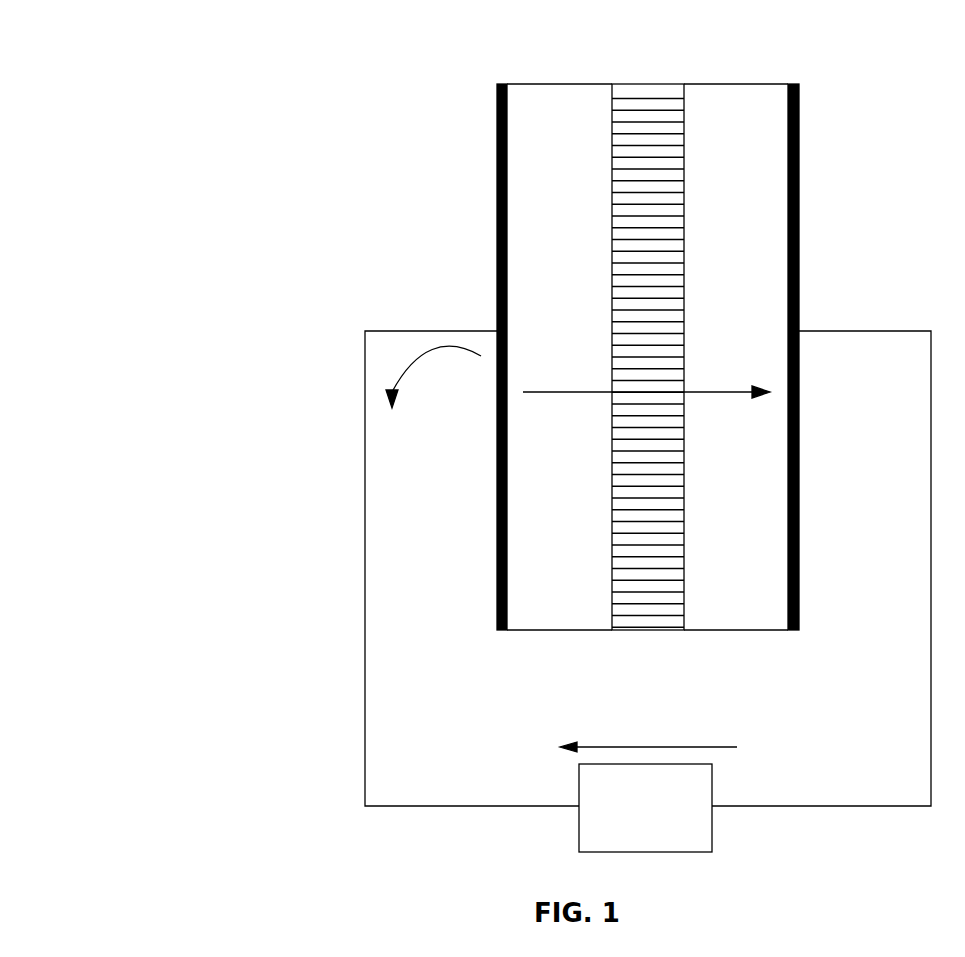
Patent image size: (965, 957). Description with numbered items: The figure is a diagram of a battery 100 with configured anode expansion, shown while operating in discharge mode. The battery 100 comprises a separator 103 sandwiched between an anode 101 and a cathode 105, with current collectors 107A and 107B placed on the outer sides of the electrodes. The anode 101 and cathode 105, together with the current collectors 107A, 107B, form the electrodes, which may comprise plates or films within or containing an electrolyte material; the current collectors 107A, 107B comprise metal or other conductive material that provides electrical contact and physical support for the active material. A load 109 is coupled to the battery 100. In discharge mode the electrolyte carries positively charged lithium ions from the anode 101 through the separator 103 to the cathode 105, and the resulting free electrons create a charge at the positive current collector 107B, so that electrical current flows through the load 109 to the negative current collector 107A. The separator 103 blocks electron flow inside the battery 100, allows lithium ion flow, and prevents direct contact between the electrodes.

The battery 100 is at (180, 173).
The anode 101 is at (541, 294).
The separator 103 is at (650, 84).
The cathode 105 is at (716, 294).
The negative current collector 107A is at (497, 110).
The positive current collector 107B is at (799, 107).
The load 109 is at (625, 832).